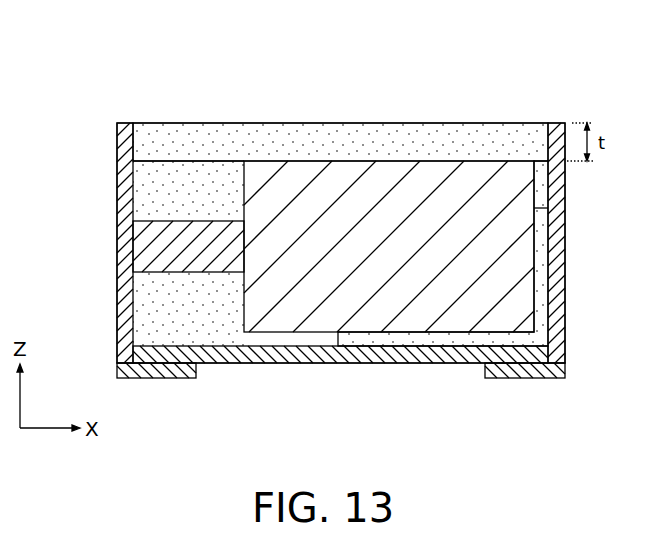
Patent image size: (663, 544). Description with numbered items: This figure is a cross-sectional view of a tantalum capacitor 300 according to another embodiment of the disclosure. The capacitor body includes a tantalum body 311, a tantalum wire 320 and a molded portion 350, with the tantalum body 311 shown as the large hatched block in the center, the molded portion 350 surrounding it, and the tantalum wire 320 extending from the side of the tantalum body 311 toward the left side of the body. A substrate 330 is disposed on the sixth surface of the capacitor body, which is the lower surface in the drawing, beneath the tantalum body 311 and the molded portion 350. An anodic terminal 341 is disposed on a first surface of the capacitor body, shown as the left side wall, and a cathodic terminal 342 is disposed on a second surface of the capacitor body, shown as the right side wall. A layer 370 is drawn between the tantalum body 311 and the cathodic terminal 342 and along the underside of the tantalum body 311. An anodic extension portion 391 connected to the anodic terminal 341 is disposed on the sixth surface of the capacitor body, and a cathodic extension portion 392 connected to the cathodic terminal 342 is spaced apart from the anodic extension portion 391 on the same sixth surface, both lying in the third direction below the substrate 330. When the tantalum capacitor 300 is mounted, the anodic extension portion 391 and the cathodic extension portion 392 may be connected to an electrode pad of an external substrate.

The tantalum capacitor 300 is at (362, 43).
The tantalum body 311 is at (427, 175).
The tantalum wire 320 is at (213, 222).
The substrate 330 is at (333, 367).
The anodic terminal 341 is at (125, 250).
The cathodic terminal 342 is at (557, 250).
The molded portion 350 is at (358, 128).
The adhesive layer 370 is at (541, 292).
The anodic extension portion 391 is at (152, 383).
The cathodic extension portion 392 is at (530, 380).